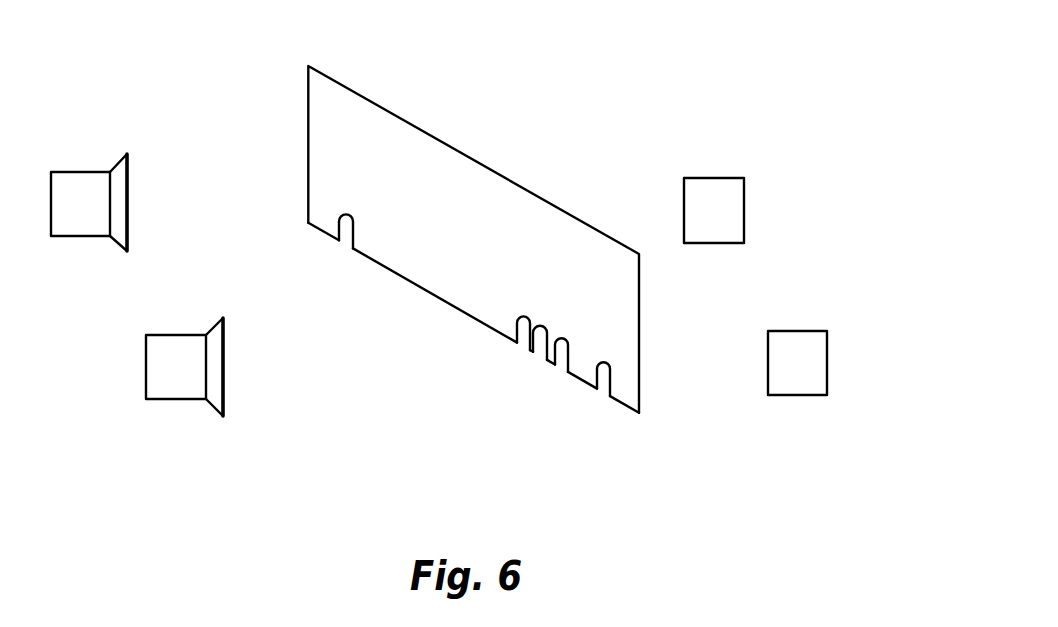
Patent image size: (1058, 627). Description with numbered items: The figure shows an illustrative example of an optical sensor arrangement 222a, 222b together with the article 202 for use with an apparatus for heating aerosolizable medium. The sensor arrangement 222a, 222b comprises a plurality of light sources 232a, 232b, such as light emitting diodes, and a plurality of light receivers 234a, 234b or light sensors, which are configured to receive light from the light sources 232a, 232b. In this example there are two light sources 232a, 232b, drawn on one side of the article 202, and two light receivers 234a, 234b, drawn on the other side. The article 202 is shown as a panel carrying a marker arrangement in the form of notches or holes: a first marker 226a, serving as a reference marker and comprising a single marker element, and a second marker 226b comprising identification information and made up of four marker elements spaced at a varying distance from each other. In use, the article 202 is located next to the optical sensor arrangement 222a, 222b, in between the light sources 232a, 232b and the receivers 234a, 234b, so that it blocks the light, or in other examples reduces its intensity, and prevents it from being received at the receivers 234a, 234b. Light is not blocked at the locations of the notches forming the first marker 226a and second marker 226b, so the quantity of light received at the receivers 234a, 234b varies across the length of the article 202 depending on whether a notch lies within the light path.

The article 202 is at (475, 161).
The first marker 226a is at (345, 255).
The second marker 226b is at (500, 345).
The light source 232a is at (90, 236).
The light source 232b is at (187, 399).
The light receiver 234a is at (715, 178).
The light receiver 234b is at (827, 360).
The optical sensor arrangement 222a is at (802, 147).
The optical sensor arrangement 222b is at (828, 413).